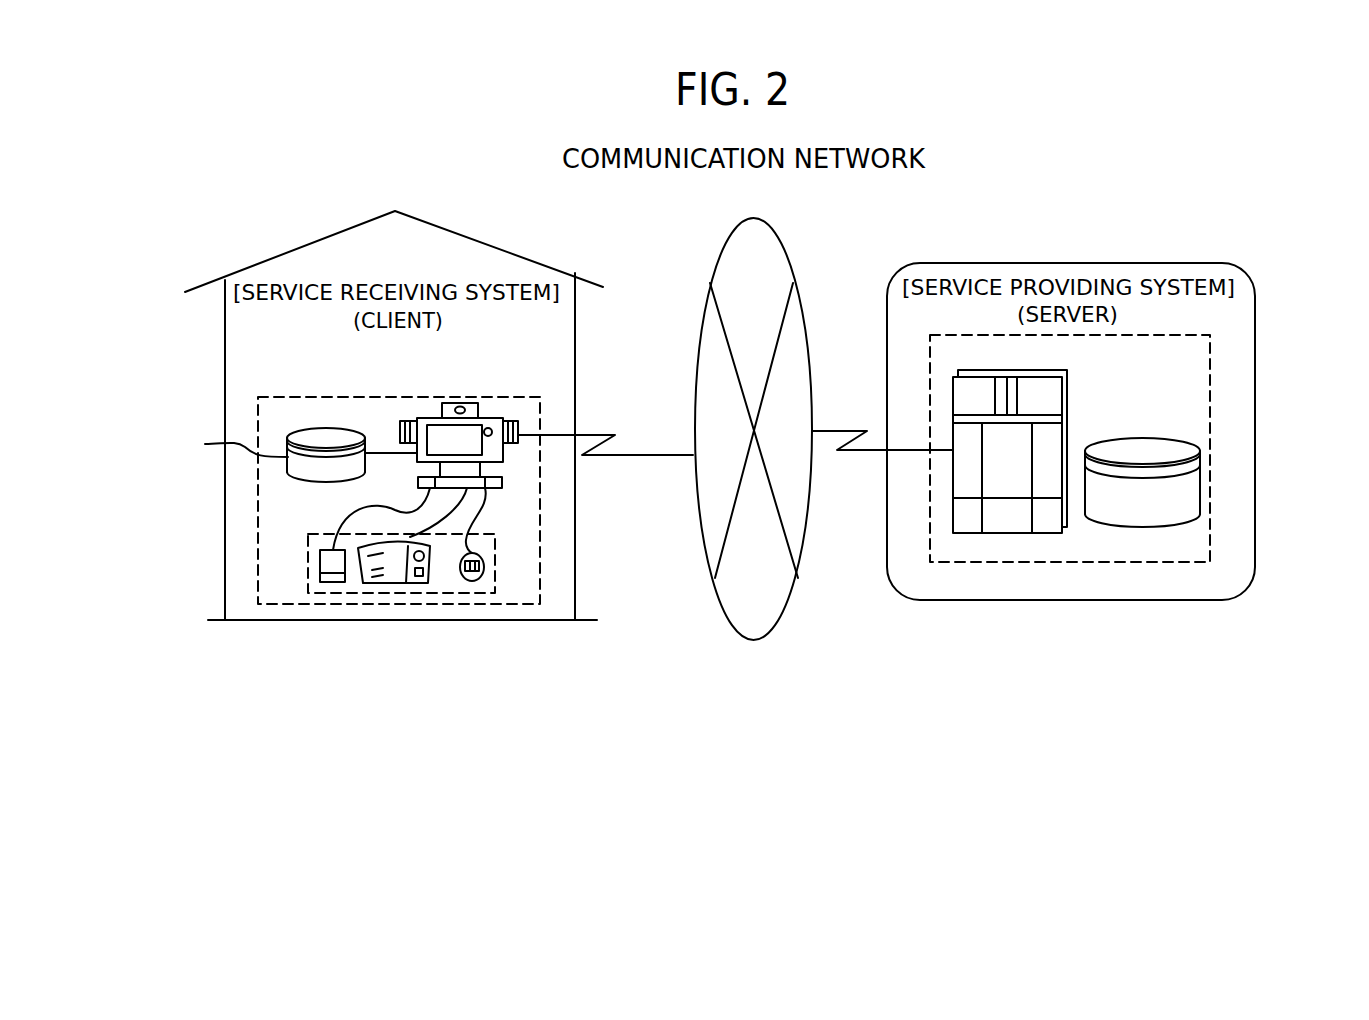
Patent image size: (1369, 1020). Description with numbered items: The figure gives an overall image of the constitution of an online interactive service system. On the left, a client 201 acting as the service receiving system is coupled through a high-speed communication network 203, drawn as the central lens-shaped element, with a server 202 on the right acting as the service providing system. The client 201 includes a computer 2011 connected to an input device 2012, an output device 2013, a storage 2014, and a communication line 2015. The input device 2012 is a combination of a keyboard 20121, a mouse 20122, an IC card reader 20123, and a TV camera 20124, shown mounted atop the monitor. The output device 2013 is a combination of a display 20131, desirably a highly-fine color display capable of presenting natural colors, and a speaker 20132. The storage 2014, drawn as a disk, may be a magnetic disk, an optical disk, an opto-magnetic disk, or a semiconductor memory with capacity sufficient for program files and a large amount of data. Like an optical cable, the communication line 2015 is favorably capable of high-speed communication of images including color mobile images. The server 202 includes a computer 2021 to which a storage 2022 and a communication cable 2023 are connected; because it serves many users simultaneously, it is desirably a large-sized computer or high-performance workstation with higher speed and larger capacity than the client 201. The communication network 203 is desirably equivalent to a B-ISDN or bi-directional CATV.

The client 201 is at (517, 395).
The computer 2011 is at (502, 483).
The input device 2012 is at (497, 578).
The output device 2013 is at (546, 472).
The display 20131 is at (477, 437).
The speaker 20132 is at (398, 433).
The TV camera 20124 is at (460, 403).
The storage 2014 is at (276, 455).
The communication line 2015 is at (594, 430).
The keyboard 20121 is at (392, 583).
The mouse 20122 is at (472, 583).
The IC card reader 20123 is at (327, 582).
The communication network 203 is at (792, 267).
The server 202 is at (1210, 360).
The computer 2021 is at (1008, 533).
The storage 2022 is at (1200, 483).
The communication cable 2023 is at (852, 427).